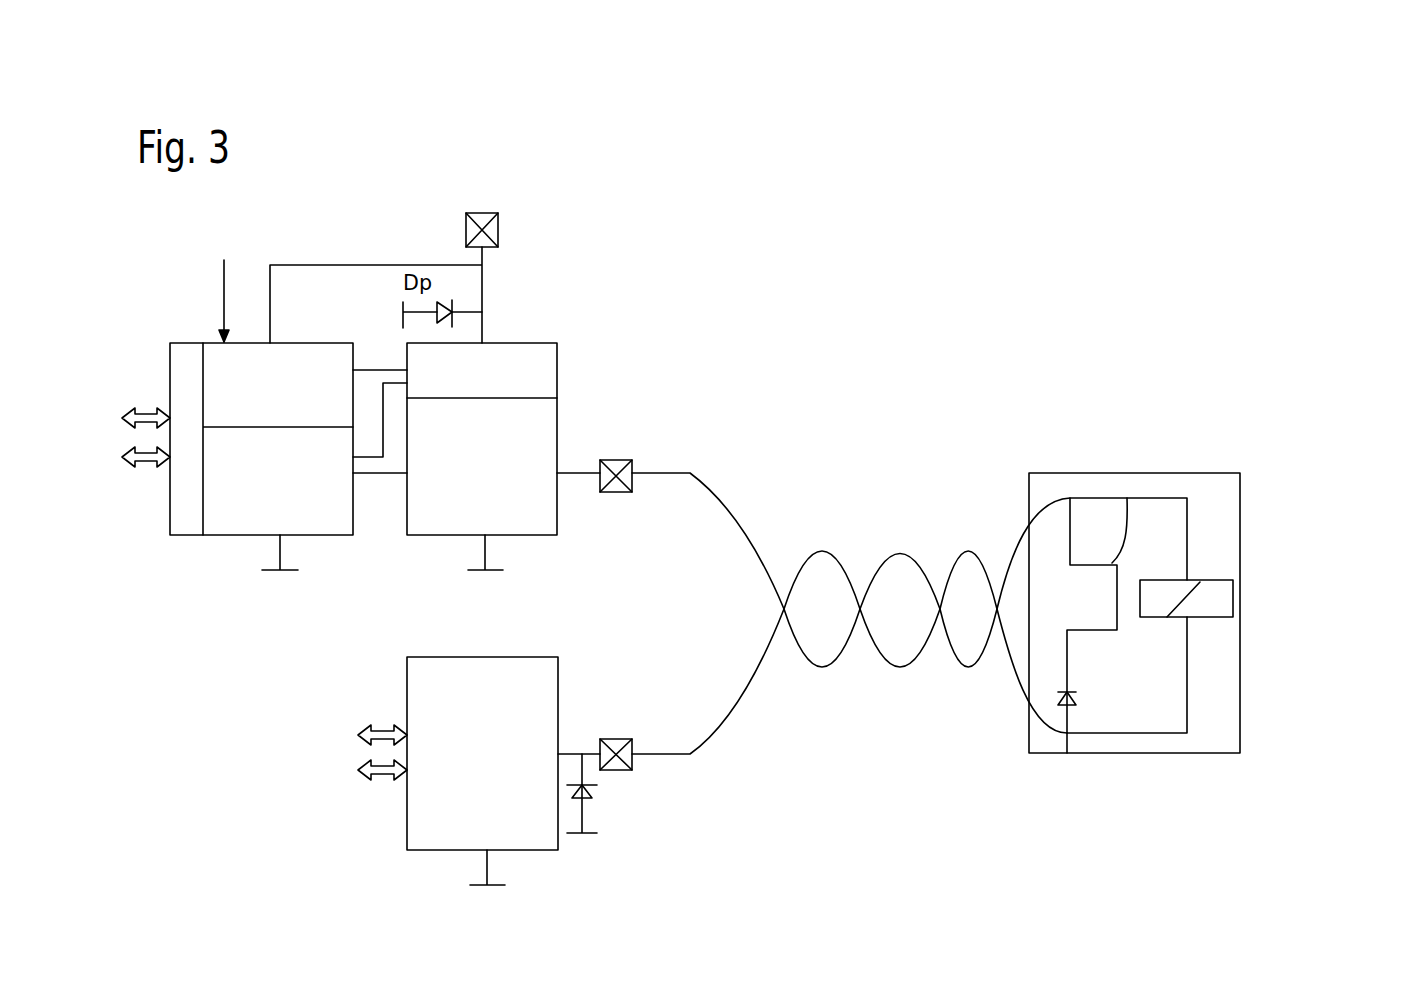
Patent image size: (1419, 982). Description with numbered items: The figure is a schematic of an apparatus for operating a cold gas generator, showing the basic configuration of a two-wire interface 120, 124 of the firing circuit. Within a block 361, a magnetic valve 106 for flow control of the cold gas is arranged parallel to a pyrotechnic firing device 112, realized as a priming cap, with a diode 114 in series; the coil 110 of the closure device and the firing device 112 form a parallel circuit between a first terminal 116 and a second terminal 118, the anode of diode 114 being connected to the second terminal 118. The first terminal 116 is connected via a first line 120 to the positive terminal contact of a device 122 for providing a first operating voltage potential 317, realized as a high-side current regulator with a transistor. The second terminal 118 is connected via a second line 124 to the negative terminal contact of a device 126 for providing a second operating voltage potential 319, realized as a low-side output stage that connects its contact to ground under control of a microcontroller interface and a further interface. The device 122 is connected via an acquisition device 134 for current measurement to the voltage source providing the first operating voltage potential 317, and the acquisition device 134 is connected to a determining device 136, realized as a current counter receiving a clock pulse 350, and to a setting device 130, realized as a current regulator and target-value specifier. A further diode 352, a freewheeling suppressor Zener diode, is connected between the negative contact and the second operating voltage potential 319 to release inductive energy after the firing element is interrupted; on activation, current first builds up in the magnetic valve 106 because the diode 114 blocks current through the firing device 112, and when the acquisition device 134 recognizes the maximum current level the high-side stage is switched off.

The first operating voltage potential 317 is at (483, 212).
The clock pulse 350 is at (225, 282).
The determining device 136 is at (320, 341).
The setting device 130 is at (322, 538).
The acquisition device 134 is at (558, 357).
The device for providing a first operating voltage potential 122 is at (538, 538).
The first line 120 is at (745, 527).
The device for providing a second operating voltage potential 126 is at (420, 655).
The second operating voltage potential 319 is at (478, 886).
The further diode 352 is at (596, 797).
The second line 124 is at (740, 700).
The block 361 is at (1240, 702).
The first terminal 116 is at (1073, 490).
The firing device 112 is at (1127, 498).
The magnetic valve 106 is at (1256, 600).
The coil 110 is at (1240, 598).
The diode 114 is at (1080, 700).
The second terminal 118 is at (1067, 753).